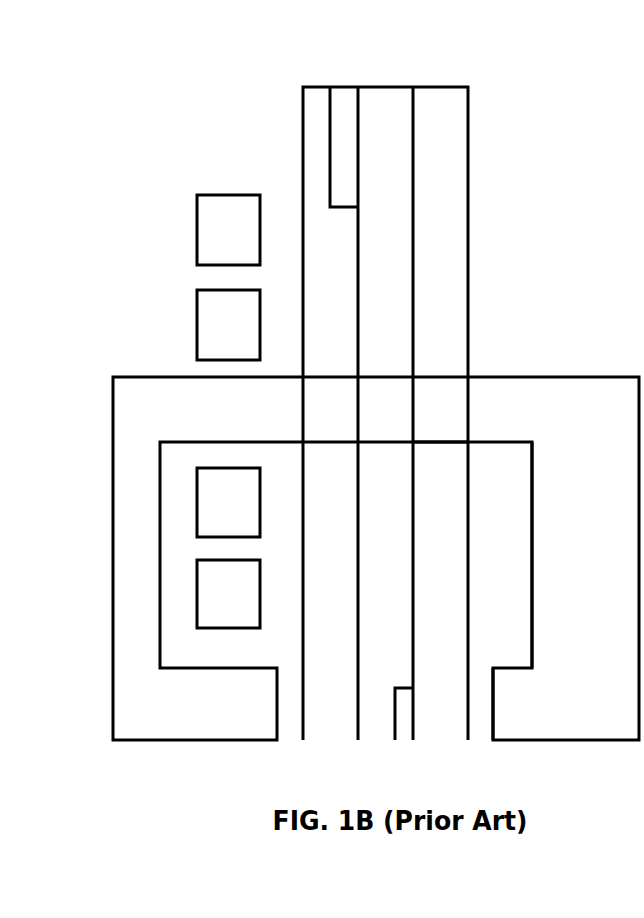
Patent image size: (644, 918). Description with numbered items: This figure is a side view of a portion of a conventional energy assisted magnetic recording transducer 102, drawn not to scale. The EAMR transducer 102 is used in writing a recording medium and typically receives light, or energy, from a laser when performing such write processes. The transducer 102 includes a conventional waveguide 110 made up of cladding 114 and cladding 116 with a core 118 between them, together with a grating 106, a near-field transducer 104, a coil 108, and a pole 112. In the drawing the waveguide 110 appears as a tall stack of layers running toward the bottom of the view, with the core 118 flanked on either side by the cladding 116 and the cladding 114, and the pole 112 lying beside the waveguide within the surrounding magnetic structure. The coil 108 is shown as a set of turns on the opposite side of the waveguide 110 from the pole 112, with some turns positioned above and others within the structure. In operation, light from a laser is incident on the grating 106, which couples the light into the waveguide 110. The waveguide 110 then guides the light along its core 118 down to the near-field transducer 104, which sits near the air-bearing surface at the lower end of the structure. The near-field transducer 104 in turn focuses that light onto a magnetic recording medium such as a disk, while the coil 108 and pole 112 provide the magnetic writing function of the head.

The energy assisted magnetic recording (EAMR) transducer 102 is at (396, 65).
The near-field transducer 104 is at (403, 716).
The grating 106 is at (345, 103).
The coil 108 is at (229, 195).
The waveguide 110 is at (568, 312).
The pole 112 is at (549, 591).
The cladding 114 is at (440, 540).
The cladding 116 is at (339, 413).
The core 118 is at (394, 413).